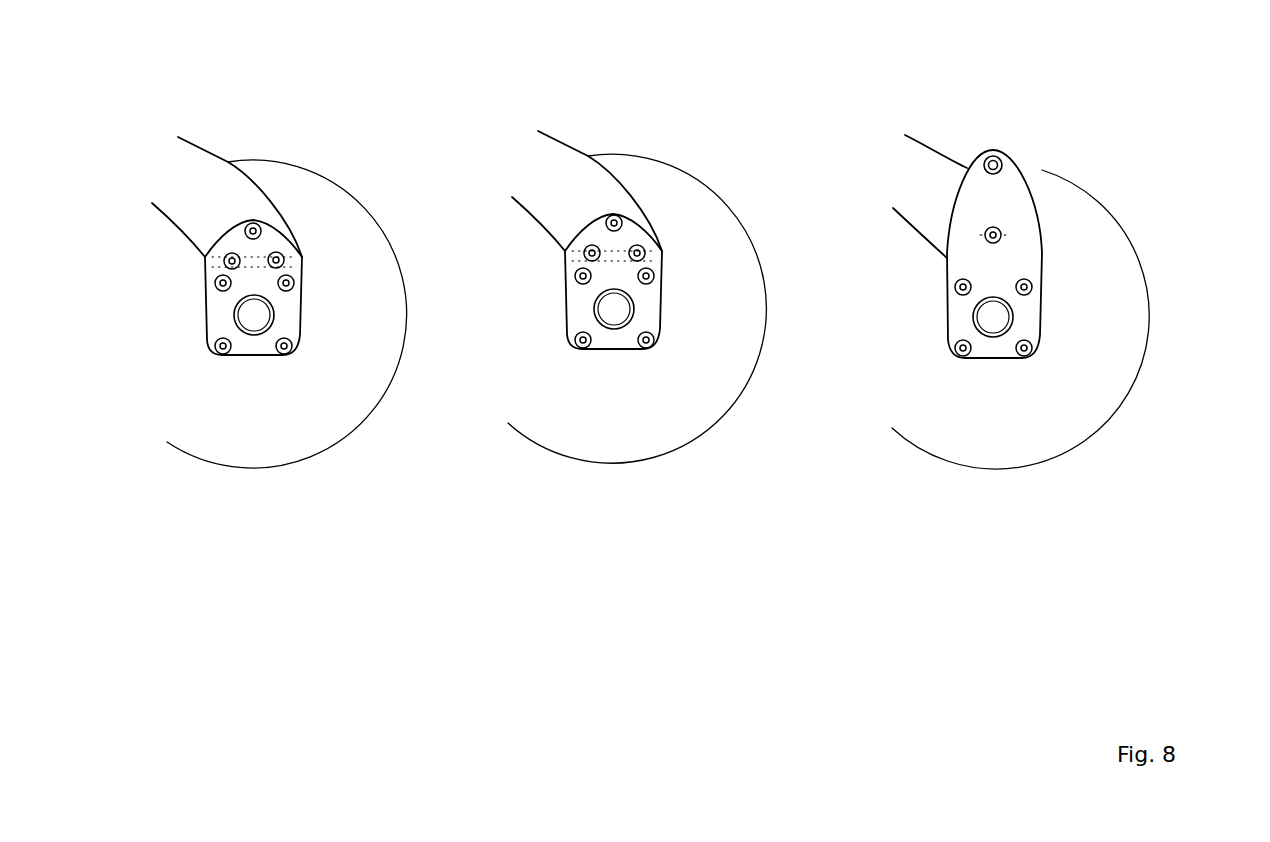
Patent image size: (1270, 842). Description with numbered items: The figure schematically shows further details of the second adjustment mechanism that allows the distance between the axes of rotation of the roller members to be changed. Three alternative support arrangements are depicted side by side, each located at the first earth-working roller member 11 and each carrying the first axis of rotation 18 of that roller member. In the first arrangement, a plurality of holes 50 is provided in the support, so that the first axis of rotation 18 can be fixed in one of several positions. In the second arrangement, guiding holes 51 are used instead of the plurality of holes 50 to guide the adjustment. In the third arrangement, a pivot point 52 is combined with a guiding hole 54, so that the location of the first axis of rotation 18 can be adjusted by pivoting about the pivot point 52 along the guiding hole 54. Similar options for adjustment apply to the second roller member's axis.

The first earth-working roller member 11 is at (182, 427).
The first axis of rotation 18 is at (254, 330).
The holes 50 is at (274, 256).
The guiding holes 51 is at (627, 221).
The pivot point 52 is at (998, 158).
The guiding hole 54 is at (1005, 227).